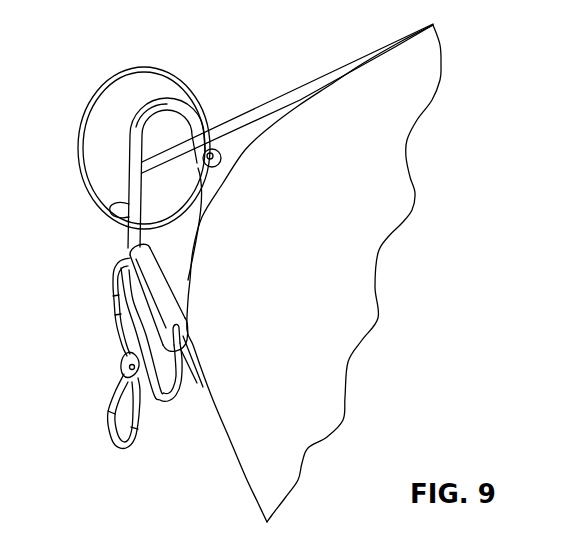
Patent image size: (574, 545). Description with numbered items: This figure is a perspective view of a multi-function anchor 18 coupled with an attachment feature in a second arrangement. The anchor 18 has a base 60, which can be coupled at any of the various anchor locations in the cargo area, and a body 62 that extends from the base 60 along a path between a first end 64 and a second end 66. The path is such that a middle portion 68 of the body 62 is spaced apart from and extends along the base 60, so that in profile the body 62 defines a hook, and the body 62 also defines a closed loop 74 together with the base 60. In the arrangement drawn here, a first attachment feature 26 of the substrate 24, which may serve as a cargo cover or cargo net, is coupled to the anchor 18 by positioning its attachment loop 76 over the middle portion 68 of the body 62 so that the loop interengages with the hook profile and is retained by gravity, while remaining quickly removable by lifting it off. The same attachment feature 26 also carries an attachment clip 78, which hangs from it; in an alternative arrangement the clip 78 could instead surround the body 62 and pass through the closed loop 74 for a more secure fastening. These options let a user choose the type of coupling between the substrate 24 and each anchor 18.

The anchor 18 is at (229, 129).
The substrate 24 is at (358, 320).
The first attachment feature 26 is at (110, 337).
The base 60 is at (150, 80).
The body 62 is at (204, 198).
The first end 64 is at (110, 212).
The second end 66 is at (220, 164).
The middle portion 68 is at (146, 109).
The closed loop 74 is at (173, 191).
The attachment loop 76 is at (250, 117).
The attachment clip 78 is at (110, 427).